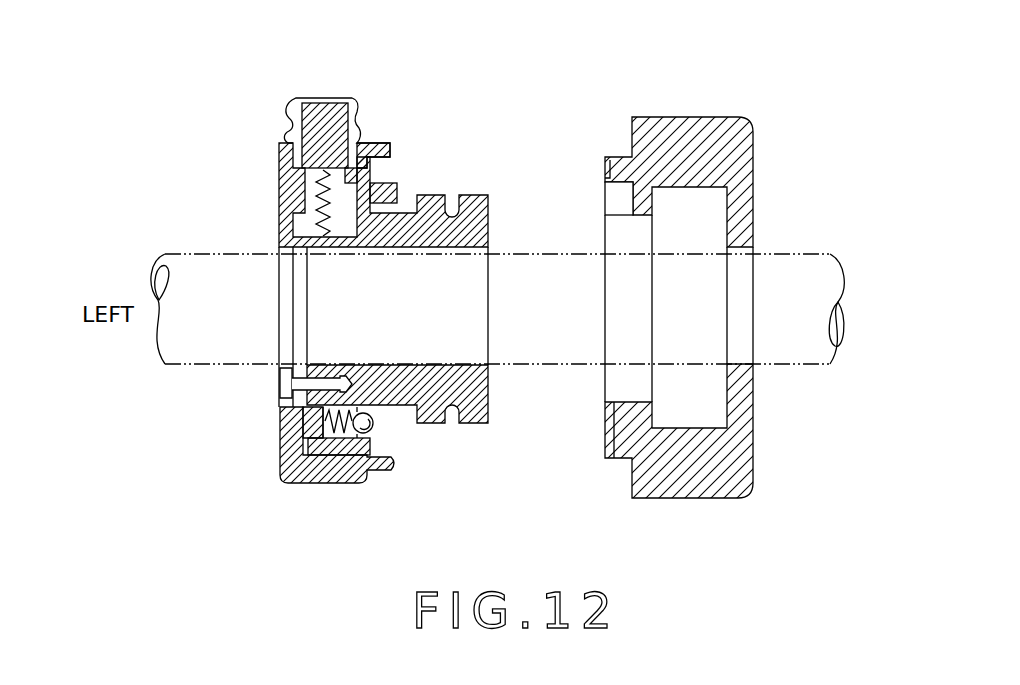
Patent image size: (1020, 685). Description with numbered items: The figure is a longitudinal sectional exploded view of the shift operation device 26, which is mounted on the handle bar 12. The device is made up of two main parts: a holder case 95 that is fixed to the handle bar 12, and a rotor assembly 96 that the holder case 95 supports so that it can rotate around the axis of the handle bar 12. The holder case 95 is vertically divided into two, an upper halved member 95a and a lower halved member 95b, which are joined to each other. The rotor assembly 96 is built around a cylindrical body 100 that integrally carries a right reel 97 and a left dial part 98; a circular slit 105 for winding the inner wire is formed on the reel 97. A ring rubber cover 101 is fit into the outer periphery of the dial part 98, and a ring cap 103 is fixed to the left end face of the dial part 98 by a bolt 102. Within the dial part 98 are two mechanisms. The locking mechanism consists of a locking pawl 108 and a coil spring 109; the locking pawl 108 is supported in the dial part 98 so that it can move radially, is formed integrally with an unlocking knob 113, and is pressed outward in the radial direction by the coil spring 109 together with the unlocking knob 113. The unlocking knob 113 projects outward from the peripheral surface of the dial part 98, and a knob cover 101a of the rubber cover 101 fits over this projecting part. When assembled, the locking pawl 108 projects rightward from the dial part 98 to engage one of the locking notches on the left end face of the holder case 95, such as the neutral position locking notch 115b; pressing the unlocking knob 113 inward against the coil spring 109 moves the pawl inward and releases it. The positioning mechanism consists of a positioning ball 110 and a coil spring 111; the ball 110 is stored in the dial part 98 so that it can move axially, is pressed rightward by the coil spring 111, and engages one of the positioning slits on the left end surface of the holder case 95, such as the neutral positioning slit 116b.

The handle bar 12 is at (786, 366).
The shift operation device 26 is at (395, 92).
The holder case 95 is at (598, 122).
The upper halved member 95a is at (700, 117).
The lower halved member 95b is at (705, 498).
The rotor assembly 96 is at (423, 128).
The right reel 97 is at (480, 423).
The left dial part 98 is at (335, 455).
The cylindrical body 100 is at (398, 405).
The ring rubber cover 101 is at (305, 484).
The knob cover 101a is at (288, 118).
The bolt 102 is at (300, 386).
The ring cap 103 is at (279, 229).
The circular slit 105 is at (451, 418).
The locking pawl 108 is at (373, 188).
The coil spring 109 is at (300, 212).
The positioning ball 110 is at (370, 412).
The coil spring 111 is at (323, 428).
The unlocking knob 113 is at (322, 118).
The neutral position locking notch 115b is at (614, 198).
The neutral positioning slit 116b is at (609, 418).